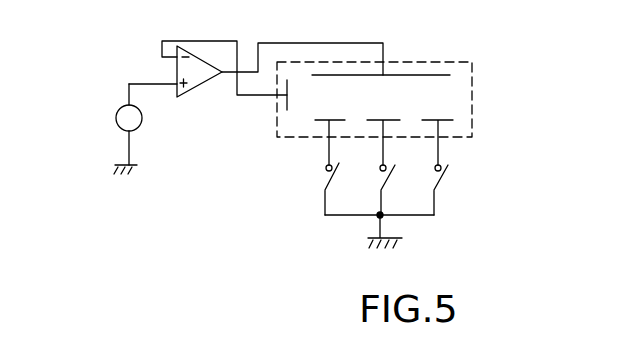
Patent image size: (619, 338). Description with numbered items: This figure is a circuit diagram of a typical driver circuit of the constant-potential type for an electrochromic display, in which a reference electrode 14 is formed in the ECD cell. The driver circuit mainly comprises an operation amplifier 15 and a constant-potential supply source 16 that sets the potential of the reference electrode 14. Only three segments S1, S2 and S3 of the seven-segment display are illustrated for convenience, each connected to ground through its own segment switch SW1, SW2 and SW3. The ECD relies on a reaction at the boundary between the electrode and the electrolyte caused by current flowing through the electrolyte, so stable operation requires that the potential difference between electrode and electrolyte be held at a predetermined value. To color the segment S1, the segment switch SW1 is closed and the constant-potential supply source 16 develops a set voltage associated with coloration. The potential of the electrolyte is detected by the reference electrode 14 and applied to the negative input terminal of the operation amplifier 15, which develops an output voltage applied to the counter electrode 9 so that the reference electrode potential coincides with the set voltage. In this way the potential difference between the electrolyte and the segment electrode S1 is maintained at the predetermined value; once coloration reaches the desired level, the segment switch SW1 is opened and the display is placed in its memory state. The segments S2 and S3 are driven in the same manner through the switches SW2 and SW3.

The counter electrode 9 is at (422, 74).
The reference electrode 14 is at (288, 105).
The operation amplifier 15 is at (195, 88).
The constant-potential supply source 16 is at (115, 120).
The segment S1 is at (318, 123).
The segment S2 is at (373, 123).
The segment S3 is at (427, 123).
The segment switch SW1 is at (343, 189).
The segment switch SW2 is at (399, 190).
The segment switch SW3 is at (454, 191).